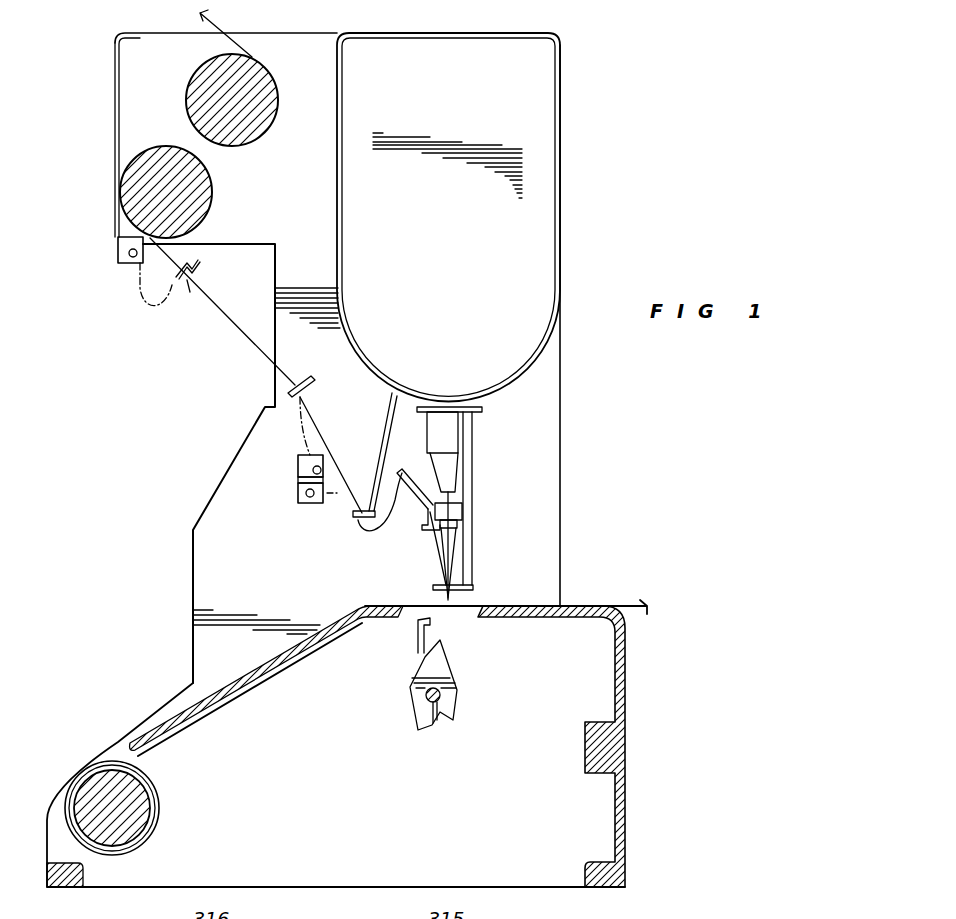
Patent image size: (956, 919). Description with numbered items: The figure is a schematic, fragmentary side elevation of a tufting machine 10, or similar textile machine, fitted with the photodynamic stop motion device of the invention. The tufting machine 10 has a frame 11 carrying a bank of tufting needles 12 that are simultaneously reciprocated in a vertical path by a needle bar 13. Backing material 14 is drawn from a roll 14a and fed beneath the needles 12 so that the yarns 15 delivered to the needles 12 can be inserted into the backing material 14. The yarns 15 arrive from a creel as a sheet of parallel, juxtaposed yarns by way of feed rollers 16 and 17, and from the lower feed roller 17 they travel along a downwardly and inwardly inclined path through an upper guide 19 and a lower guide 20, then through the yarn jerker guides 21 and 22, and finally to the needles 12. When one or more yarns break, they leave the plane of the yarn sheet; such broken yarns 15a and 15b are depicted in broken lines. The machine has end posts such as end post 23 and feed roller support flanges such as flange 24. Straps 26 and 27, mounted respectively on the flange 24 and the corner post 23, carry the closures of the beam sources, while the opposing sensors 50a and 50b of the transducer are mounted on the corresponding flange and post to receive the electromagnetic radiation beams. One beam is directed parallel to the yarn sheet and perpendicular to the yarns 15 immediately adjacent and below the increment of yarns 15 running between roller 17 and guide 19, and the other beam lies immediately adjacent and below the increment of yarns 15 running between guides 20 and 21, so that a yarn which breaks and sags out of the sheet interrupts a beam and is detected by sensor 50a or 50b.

The tufting machine 10 is at (567, 210).
The frame 11 is at (547, 152).
The tufting needles 12 is at (450, 558).
The needle bar 13 is at (457, 510).
The backing material 14 is at (247, 675).
The roll 14a is at (155, 823).
The yarns 15 is at (230, 312).
The broken yarn 15a is at (140, 288).
The broken yarn 15b is at (313, 442).
The feed roller 16 is at (255, 132).
The feed roller 17 is at (213, 193).
The upper guide 19 is at (198, 262).
The lower guide 20 is at (293, 402).
The yarn jerker guide 21 is at (357, 522).
The yarn jerker guide 22 is at (398, 478).
The end post 23 is at (548, 462).
The feed roller support flange 24 is at (162, 44).
The strap 26 is at (115, 222).
The strap 27 is at (298, 497).
The sensor 50a is at (117, 258).
The sensor 50b is at (298, 468).